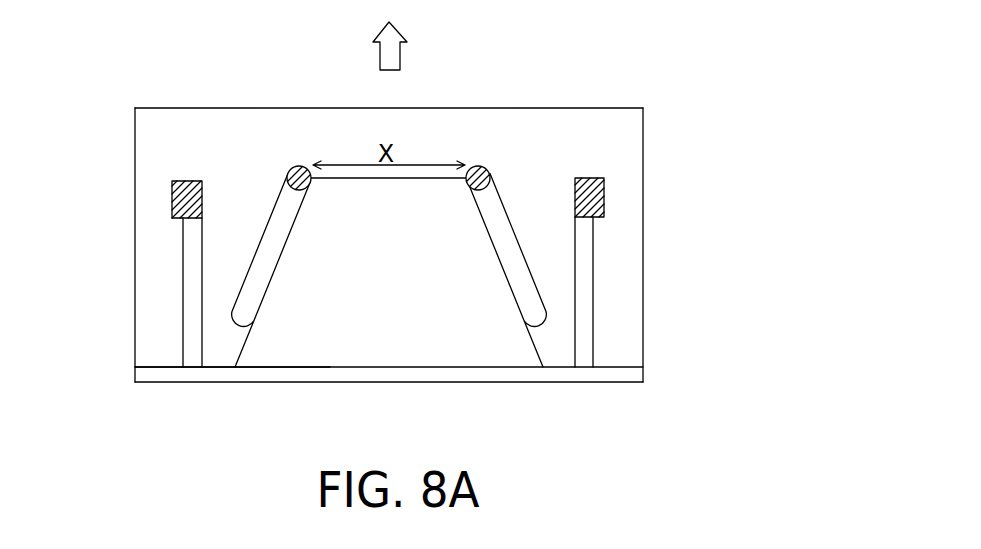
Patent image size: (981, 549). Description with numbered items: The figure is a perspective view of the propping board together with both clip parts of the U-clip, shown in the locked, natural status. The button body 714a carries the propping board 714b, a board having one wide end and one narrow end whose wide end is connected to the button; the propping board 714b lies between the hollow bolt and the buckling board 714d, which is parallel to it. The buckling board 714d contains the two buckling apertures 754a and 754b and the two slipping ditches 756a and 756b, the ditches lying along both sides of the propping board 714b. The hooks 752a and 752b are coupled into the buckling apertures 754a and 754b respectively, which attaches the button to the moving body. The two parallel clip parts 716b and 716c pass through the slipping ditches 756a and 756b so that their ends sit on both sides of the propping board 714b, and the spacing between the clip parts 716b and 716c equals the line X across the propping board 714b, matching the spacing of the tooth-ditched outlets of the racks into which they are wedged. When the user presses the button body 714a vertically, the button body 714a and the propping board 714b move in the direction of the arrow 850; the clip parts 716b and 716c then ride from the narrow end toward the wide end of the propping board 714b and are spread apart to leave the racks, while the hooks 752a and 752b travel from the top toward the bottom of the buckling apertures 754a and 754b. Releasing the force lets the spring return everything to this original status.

The button body 714a is at (622, 373).
The propping board 714b is at (284, 349).
The buckling board 714d is at (340, 123).
The clip part 716b is at (481, 167).
The clip part 716c is at (294, 168).
The hook 752a is at (583, 185).
The hook 752b is at (192, 183).
The buckling aperture 754a is at (591, 263).
The buckling aperture 754b is at (182, 258).
The slipping ditch 756a is at (498, 252).
The slipping ditch 756b is at (271, 258).
The arrow 850 is at (400, 57).